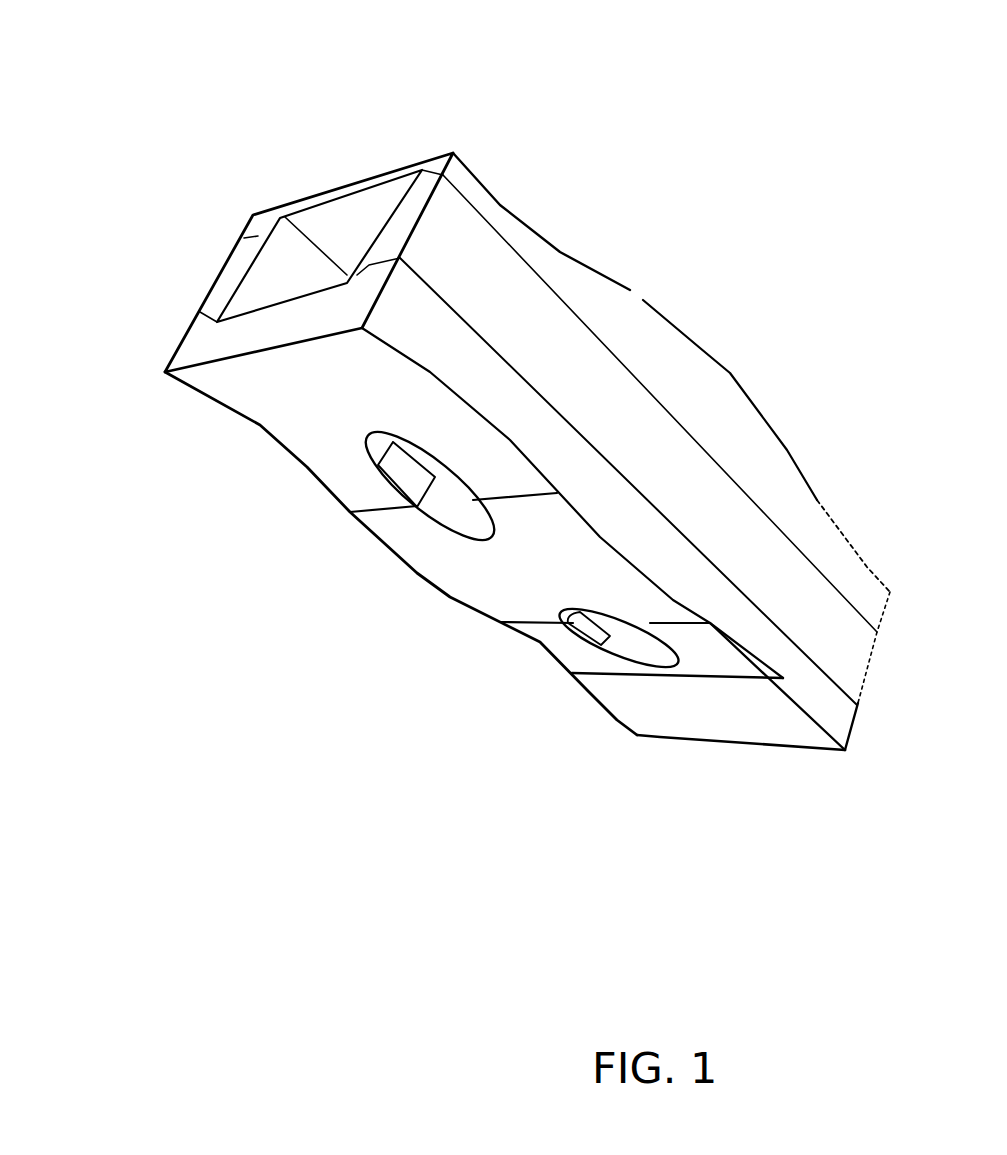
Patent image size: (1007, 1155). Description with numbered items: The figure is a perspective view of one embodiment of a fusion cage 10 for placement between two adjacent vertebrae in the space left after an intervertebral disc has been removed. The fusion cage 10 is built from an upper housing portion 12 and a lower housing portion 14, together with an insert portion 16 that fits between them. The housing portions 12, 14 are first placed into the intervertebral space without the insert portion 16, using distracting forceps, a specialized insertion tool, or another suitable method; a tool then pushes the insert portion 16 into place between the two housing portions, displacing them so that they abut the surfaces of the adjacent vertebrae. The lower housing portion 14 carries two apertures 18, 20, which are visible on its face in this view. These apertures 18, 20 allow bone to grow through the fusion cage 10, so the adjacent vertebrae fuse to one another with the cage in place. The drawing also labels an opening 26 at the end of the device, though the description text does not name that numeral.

The fusion cage 10 is at (830, 100).
The upper housing portion 12 is at (665, 327).
The lower housing portion 14 is at (632, 713).
The insert portion 16 is at (233, 263).
The aperture 18 is at (636, 642).
The aperture 20 is at (437, 477).
The opening 26 is at (343, 227).